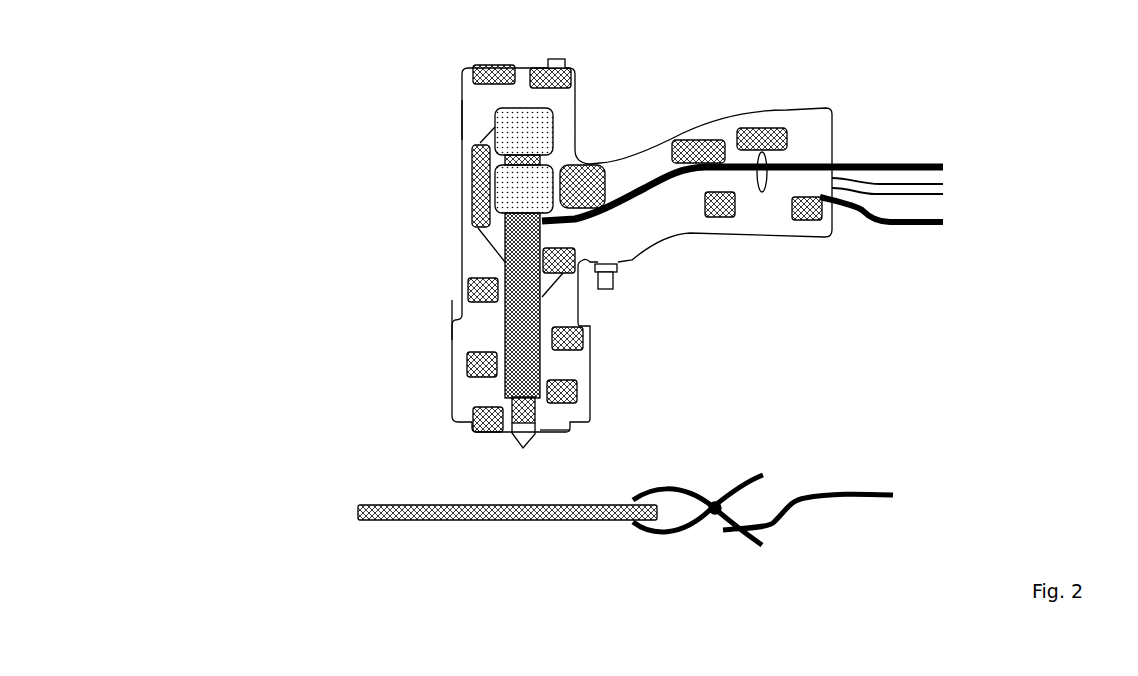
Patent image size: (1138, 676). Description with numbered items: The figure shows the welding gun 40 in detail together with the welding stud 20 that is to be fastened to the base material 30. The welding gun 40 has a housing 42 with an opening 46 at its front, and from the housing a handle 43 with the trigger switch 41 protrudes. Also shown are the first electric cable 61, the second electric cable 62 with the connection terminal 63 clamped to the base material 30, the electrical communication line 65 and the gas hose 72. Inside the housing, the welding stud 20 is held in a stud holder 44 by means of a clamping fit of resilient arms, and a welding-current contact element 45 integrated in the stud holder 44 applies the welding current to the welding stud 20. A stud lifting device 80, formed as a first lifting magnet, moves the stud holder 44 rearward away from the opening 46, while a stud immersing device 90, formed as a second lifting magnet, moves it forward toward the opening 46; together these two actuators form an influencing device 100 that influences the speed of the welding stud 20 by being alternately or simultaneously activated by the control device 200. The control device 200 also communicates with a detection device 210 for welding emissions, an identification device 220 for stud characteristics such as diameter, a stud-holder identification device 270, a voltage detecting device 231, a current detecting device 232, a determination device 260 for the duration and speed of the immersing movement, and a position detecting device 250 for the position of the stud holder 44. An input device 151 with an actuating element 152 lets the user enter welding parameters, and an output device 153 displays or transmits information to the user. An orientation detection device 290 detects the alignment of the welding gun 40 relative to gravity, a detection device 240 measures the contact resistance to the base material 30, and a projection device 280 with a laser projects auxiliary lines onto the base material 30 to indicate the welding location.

The welding stud 20 is at (522, 448).
The base material 30 is at (420, 522).
The welding gun 40 is at (318, 87).
The trigger switch 41 is at (615, 280).
The housing 42 is at (460, 102).
The handle 43 is at (758, 112).
The stud holder 44 is at (466, 312).
The welding-current contact element 45 is at (455, 398).
The opening 46 is at (547, 435).
The first electric cable 61 is at (870, 163).
The second electric cable 62 is at (840, 500).
The connection terminal 63 is at (687, 533).
The electrical communication line 65 is at (917, 220).
The gas hose 72 is at (942, 183).
The stud lifting device 80 is at (528, 199).
The stud immersing device 90 is at (528, 122).
The influencing device 100 is at (427, 100).
The input device 151 is at (572, 72).
The actuating element 152 is at (553, 61).
The output device 153 is at (495, 67).
The control device 200 is at (582, 178).
The detection device 210 is at (470, 418).
The identification device 220 is at (580, 393).
The voltage detecting device 231 is at (466, 363).
The current detecting device 232 is at (697, 140).
The detection device 240 is at (590, 350).
The position detecting device 250 is at (460, 185).
The determination device 260 is at (463, 288).
The stud-holder identification device 270 is at (620, 266).
The projection device 280 is at (823, 213).
The orientation detection device 290 is at (740, 203).